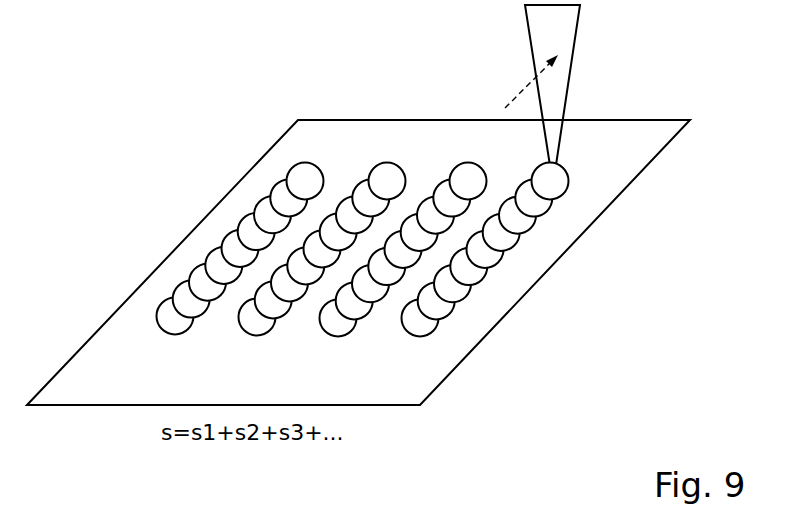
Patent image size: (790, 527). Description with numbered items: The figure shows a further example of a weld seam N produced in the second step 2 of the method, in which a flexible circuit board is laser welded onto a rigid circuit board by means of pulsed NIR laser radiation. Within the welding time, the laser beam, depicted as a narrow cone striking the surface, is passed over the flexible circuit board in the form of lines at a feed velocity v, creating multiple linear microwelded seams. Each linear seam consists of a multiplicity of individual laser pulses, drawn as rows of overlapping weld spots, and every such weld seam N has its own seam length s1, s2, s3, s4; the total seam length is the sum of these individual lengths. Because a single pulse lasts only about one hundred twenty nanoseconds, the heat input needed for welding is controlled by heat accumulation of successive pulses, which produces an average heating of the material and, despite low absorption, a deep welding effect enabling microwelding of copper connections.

The weld seam N is at (349, 275).
The seam length of first linear weld seam s1 is at (172, 328).
The seam length of second linear weld seam s2 is at (254, 329).
The seam length of third linear weld seam s3 is at (336, 330).
The seam length of fourth linear weld seam s4 is at (418, 330).
The second step of the method 2 is at (538, 95).
The feed velocity of the laser beam v is at (528, 84).